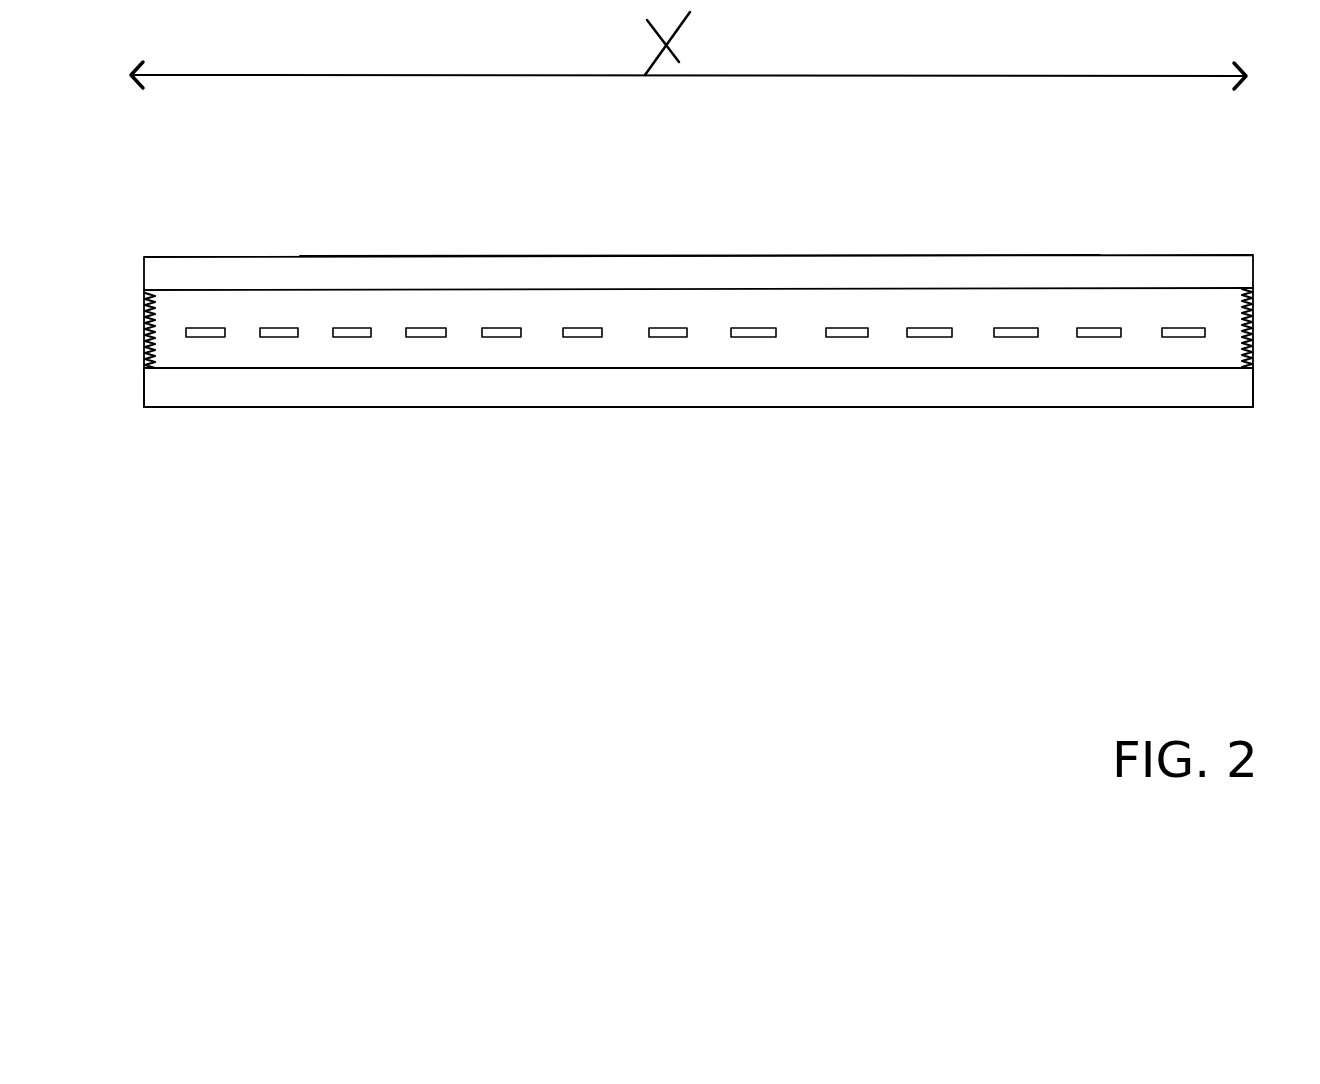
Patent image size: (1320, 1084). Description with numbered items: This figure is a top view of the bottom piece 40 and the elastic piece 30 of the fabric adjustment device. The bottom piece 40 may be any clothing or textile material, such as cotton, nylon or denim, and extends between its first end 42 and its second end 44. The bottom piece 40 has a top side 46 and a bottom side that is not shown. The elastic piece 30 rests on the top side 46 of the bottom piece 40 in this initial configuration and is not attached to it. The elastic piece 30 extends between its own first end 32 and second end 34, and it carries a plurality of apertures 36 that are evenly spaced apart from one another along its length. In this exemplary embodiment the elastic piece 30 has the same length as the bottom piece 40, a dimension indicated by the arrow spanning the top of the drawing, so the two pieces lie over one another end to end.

The elastic piece 30 is at (698, 274).
The first end 32 is at (155, 318).
The second end 34 is at (1233, 312).
The apertures 36 is at (415, 338).
The bottom piece 40 is at (698, 283).
The first end 42 is at (133, 385).
The second end 44 is at (1265, 383).
The top side 46 is at (930, 278).